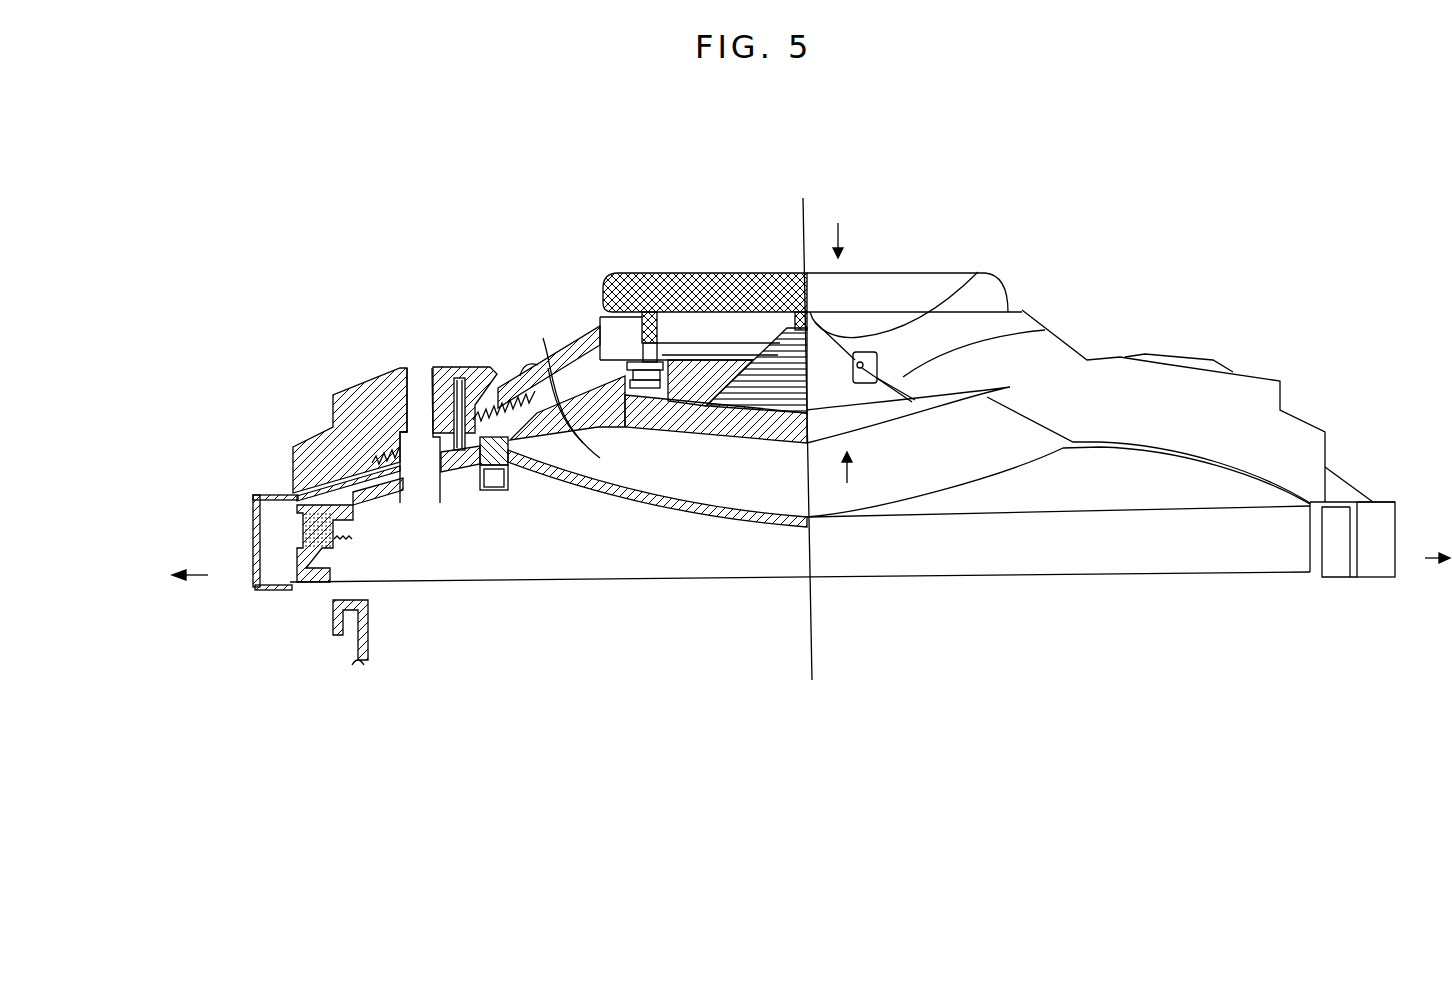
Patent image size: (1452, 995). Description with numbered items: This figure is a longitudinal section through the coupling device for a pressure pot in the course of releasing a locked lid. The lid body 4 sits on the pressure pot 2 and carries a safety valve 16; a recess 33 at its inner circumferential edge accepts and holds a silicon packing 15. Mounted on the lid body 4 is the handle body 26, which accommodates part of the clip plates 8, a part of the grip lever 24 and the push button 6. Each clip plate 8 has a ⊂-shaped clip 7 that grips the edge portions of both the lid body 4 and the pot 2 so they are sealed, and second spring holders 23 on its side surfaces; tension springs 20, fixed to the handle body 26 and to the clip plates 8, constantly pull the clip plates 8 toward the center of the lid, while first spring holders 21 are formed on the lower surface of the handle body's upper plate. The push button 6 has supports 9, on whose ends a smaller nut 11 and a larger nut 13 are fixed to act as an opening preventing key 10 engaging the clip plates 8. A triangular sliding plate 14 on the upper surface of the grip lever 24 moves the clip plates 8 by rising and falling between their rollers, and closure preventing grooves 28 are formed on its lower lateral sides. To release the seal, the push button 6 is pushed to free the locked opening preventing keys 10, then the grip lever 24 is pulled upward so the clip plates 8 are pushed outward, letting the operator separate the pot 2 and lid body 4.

The pressure pot 2 is at (368, 606).
The lid body 4 is at (712, 527).
The push button 6 is at (697, 273).
The ⊂-shaped clip 7 is at (1330, 577).
The clip plate 8 is at (258, 593).
The support 9 is at (658, 323).
The opening preventing key 10 is at (672, 380).
The nut having a smaller diameter 11 is at (597, 330).
The nut having a larger diameter 13 is at (548, 368).
The triangular sliding plate 14 is at (978, 272).
The silicon packing 15 is at (353, 541).
The safety valve 16 is at (415, 385).
The tension spring 20 is at (503, 390).
The first spring holder 21 is at (555, 425).
The second spring holder 23 is at (380, 490).
The grip lever 24 is at (757, 447).
The handle body 26 is at (358, 395).
The closure preventing groove 28 is at (1043, 330).
The recess 33 is at (298, 532).